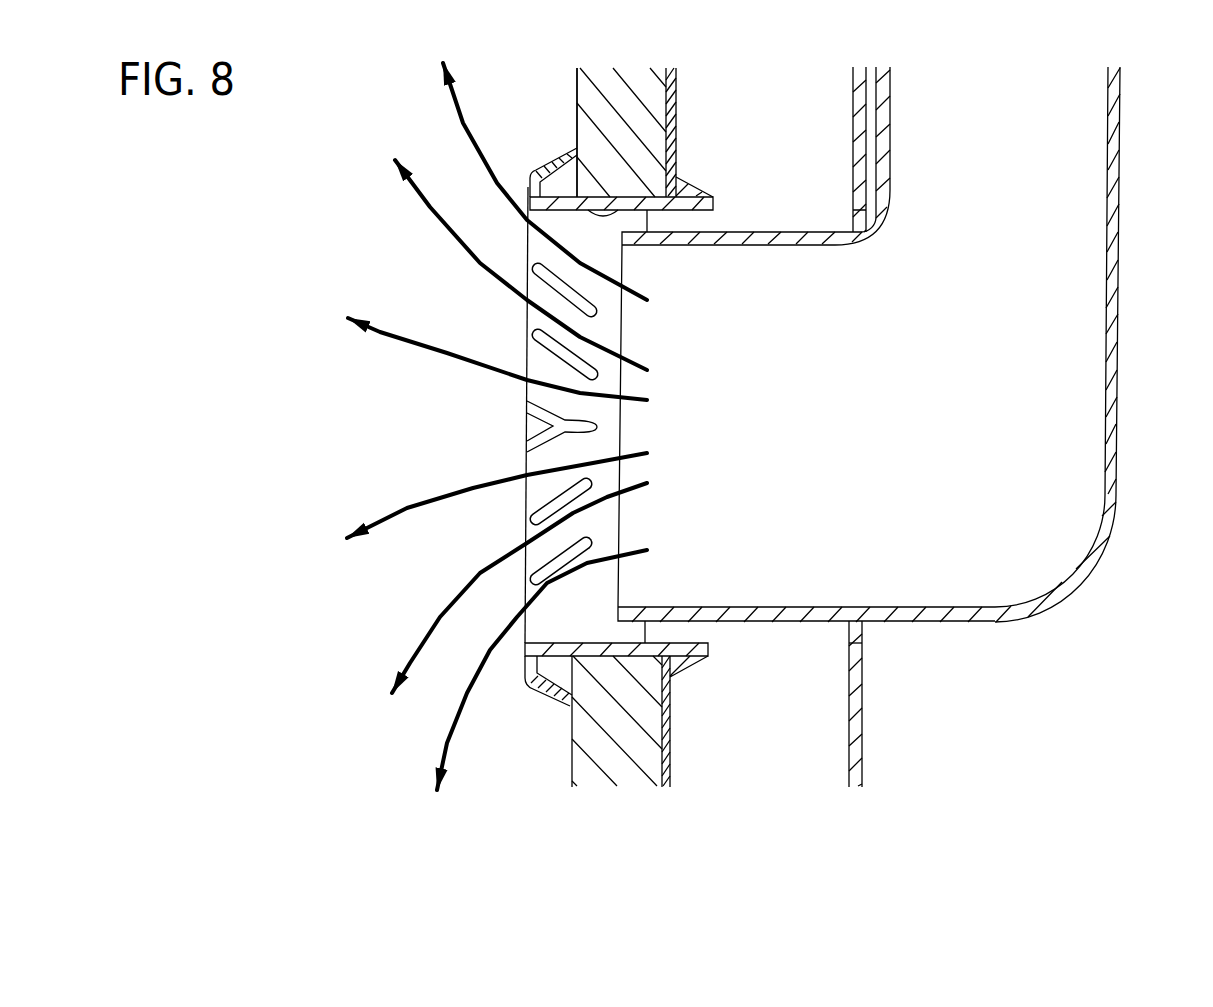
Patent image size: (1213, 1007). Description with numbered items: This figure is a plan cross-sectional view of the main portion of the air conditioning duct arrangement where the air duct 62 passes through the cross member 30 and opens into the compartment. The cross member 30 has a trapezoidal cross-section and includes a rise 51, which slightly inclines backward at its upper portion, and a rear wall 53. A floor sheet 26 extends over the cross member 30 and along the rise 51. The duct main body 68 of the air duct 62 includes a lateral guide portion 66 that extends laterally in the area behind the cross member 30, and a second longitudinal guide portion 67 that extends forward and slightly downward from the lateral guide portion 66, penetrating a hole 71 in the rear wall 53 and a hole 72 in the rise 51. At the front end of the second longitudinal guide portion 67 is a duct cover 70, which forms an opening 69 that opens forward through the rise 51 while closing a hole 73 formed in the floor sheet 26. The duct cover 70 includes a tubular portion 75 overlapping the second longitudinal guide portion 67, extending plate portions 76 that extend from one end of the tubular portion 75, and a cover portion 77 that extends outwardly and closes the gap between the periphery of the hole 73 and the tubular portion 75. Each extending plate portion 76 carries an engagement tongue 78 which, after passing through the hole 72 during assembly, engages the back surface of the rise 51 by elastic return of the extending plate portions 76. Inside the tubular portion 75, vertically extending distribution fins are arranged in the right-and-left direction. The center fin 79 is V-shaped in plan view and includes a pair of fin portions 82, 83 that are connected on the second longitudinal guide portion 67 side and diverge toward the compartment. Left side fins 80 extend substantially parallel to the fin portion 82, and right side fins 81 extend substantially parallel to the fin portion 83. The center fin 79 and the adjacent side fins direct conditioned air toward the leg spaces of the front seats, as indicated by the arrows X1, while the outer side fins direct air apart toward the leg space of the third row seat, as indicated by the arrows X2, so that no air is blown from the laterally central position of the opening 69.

The floor sheet 26 is at (577, 108).
The hole 73 is at (628, 197).
The engagement tongue 78 is at (695, 184).
The extending plate portion 76 is at (713, 203).
The cover portion 77 is at (530, 186).
The hole 72 is at (668, 210).
The second longitudinal guide portion 67 is at (780, 588).
The tubular portion 75 is at (647, 632).
The duct cover 70 is at (512, 655).
The right side fin 81 is at (528, 258).
The opening 69 is at (540, 367).
The fin portion 83 is at (527, 404).
The center fin 79 is at (597, 428).
The fin portion 82 is at (527, 447).
The left side fin 80 is at (547, 500).
The rise 51 is at (660, 765).
The lateral guide portion 66 is at (1082, 108).
The duct main body 68 is at (1043, 603).
The air duct 62 is at (1098, 588).
The rear wall 53 is at (862, 765).
The cross member 30 is at (878, 748).
The hole 71 is at (862, 632).
The arrows X1 is at (393, 330).
The arrows X2 is at (460, 123).